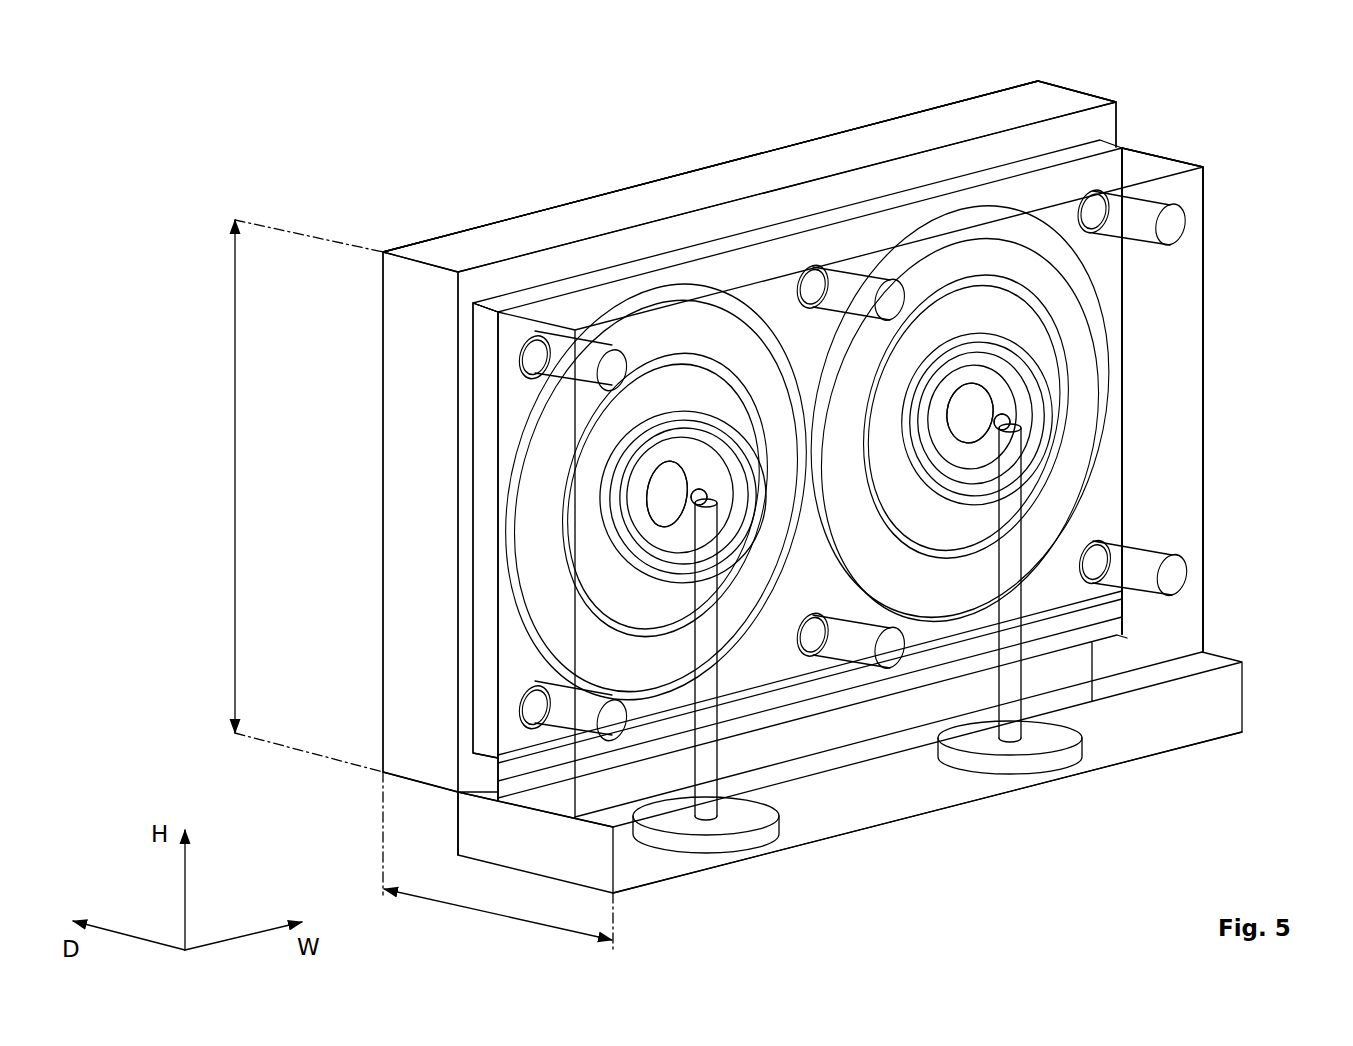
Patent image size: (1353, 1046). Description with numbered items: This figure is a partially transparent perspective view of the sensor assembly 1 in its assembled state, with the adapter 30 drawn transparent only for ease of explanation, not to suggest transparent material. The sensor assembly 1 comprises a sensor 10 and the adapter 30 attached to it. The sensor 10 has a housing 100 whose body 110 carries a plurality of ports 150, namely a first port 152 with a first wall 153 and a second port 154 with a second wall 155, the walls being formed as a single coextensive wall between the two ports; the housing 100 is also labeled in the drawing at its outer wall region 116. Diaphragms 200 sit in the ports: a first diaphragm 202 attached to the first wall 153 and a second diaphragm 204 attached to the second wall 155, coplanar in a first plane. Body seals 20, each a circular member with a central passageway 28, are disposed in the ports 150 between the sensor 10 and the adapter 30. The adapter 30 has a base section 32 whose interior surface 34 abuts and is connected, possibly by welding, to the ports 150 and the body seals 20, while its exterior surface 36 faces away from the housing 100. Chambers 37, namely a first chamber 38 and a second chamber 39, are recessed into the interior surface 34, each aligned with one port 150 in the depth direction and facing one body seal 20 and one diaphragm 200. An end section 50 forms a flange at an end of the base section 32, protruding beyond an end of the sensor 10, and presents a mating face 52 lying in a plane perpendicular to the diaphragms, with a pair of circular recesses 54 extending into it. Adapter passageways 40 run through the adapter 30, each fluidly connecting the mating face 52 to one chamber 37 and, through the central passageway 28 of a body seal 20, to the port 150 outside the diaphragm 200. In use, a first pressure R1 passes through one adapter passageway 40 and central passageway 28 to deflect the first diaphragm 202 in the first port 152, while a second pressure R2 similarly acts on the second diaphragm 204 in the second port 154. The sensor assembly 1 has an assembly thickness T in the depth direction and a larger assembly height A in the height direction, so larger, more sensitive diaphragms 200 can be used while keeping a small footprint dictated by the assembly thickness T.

The sensor assembly 1 is at (376, 132).
The sensor 10 is at (1044, 76).
The housing 100 is at (1116, 97).
The frame wall 116 is at (482, 231).
The body 110 is at (368, 613).
The second wall 155 is at (482, 385).
The interior surface 34 is at (497, 680).
The ports 150 is at (488, 438).
The first port 152 is at (1222, 391).
The second port 154 is at (397, 551).
The first wall 153 is at (1130, 340).
The adapter 30 is at (1210, 190).
The base section 32 is at (1210, 338).
The exterior surface 36 is at (1190, 535).
The end section 50 is at (1250, 703).
The mating face 52 is at (1174, 748).
The recesses 54 is at (757, 842).
The central passageway 28 is at (667, 452).
The body seals 20 is at (709, 382).
The diaphragms 200 is at (650, 490).
The first diaphragm 202 is at (1137, 435).
The second diaphragm 204 is at (502, 507).
The chambers 37 is at (596, 583).
The first chamber 38 is at (1144, 470).
The second chamber 39 is at (503, 596).
The adapter passageways 40 is at (707, 657).
The first pressure R1 is at (1010, 816).
The second pressure R2 is at (706, 883).
The assembly height A is at (233, 333).
The assembly thickness T is at (500, 917).